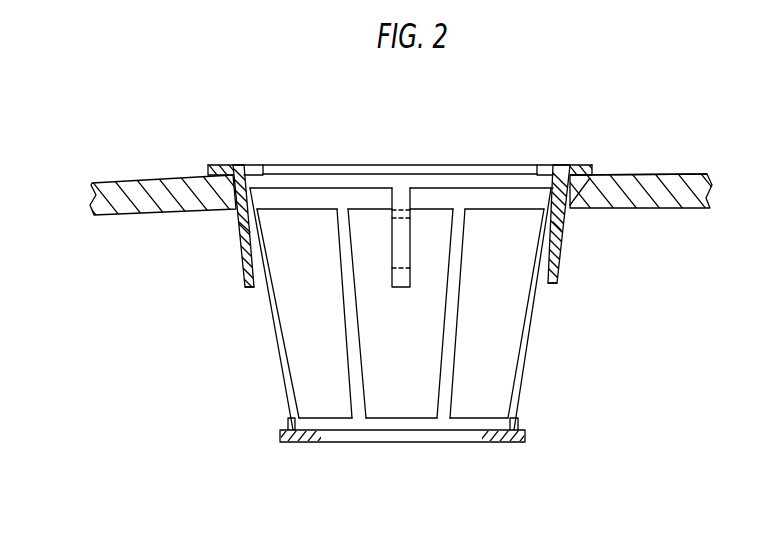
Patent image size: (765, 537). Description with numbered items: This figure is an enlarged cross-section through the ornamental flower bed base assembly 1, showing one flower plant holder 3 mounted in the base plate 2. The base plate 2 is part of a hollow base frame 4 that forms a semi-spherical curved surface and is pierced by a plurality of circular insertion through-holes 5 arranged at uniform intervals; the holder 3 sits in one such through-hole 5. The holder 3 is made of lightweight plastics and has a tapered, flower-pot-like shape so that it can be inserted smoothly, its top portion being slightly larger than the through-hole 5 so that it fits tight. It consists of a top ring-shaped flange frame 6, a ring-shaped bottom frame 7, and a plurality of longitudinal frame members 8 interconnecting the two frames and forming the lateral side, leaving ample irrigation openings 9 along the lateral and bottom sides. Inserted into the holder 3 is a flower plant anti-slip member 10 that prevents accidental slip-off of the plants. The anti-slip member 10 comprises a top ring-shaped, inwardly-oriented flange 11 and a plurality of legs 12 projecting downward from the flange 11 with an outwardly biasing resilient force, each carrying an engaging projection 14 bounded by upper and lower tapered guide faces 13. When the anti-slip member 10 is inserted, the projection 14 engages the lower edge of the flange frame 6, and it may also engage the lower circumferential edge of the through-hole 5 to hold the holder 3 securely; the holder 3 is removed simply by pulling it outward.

The ornamental flower bed base assembly 1 is at (678, 168).
The base plate 2 is at (630, 173).
The flower plant holder 3 is at (436, 196).
The hollow base frame 4 is at (168, 190).
The insertion through-hole 5 is at (577, 209).
The top ring-shaped flange frame 6 is at (226, 164).
The ring-shaped bottom frame 7 is at (505, 433).
The longitudinal frame member 8 is at (355, 362).
The irrigation opening 9 is at (308, 392).
The flower plant anti-slip member 10 is at (316, 182).
The top ring-shaped, inwardly-oriented flange 11 is at (254, 164).
The leg 12 is at (401, 290).
The tapered guide face 13 is at (238, 212).
The engaging projection 14 is at (243, 237).